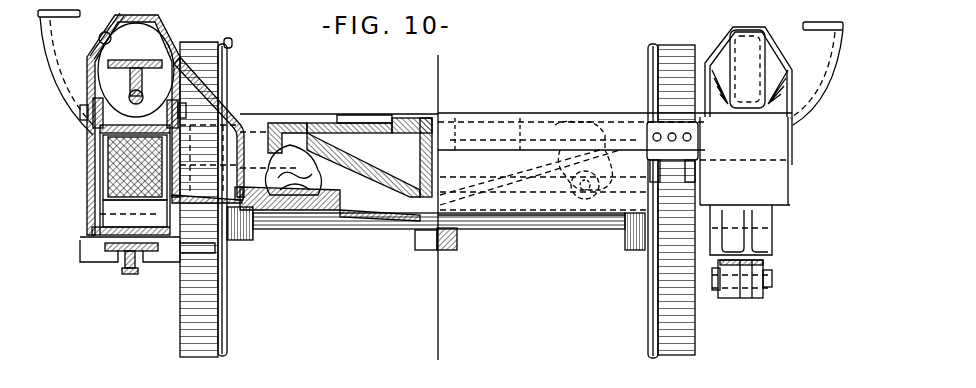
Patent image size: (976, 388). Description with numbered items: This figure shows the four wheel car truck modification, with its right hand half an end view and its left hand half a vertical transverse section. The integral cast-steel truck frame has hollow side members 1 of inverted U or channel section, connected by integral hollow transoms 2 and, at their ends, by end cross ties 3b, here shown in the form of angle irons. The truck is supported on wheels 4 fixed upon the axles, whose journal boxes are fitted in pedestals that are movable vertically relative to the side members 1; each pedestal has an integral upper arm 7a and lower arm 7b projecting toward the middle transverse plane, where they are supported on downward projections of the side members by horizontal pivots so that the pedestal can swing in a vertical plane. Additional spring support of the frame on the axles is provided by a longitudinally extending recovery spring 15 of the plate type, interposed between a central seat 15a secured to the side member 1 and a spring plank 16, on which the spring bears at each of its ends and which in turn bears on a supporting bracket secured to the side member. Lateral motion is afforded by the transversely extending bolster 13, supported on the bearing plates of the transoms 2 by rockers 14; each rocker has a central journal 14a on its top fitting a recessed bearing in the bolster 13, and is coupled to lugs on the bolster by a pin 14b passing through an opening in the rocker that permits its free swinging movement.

The side member 1 is at (166, 30).
The transom 2 is at (363, 223).
The end cross tie 3b is at (612, 124).
The wheel 4 is at (223, 317).
The upper arm 7a is at (135, 67).
The lower arm 7b is at (130, 275).
The bolster 13 is at (367, 127).
The rocker 14 is at (312, 178).
The central journal 14a is at (290, 145).
The pin 14b is at (252, 179).
The recovery spring 15 is at (110, 180).
The central seat 15a is at (95, 140).
The spring plank 16 is at (97, 225).